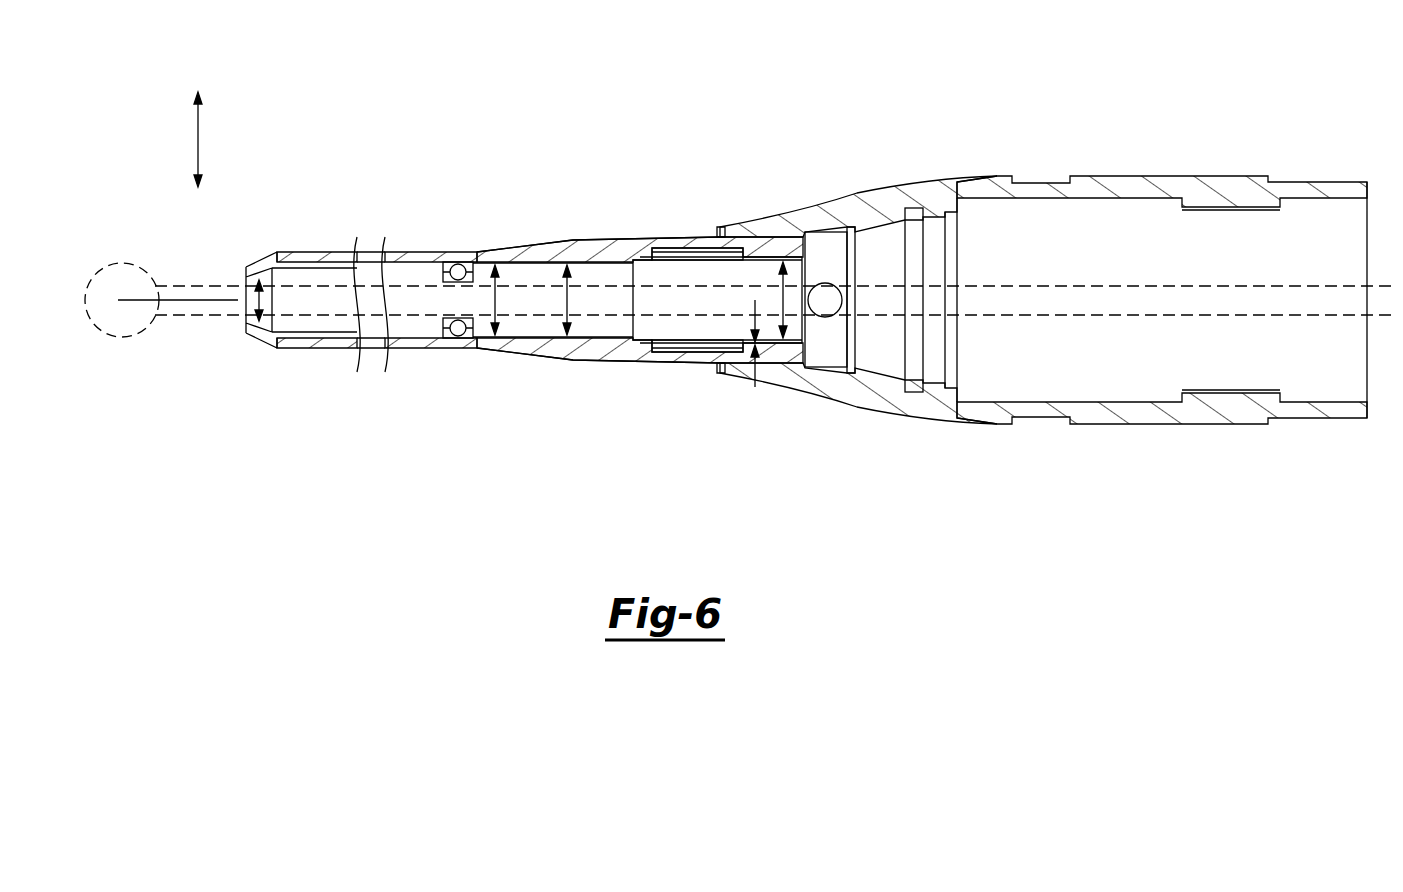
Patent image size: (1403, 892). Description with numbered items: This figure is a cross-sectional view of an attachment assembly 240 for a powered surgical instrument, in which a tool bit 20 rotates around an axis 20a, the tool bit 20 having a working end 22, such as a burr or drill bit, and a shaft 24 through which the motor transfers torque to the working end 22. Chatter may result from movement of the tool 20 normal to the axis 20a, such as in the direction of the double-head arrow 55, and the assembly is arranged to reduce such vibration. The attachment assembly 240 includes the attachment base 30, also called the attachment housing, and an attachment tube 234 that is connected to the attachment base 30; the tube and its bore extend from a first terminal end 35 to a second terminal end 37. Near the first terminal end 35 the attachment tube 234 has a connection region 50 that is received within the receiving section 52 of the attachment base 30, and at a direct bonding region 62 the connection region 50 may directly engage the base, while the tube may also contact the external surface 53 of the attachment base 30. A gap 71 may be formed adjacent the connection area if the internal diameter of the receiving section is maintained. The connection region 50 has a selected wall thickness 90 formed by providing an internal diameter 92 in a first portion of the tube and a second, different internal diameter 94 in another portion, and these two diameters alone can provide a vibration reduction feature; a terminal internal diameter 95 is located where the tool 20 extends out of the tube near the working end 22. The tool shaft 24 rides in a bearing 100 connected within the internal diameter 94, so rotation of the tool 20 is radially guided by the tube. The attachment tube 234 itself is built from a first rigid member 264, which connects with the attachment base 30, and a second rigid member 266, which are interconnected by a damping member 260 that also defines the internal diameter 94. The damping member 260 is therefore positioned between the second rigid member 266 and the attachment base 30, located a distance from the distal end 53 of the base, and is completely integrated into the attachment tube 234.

The tool bit 20 is at (172, 330).
The axis 20a is at (220, 297).
The working end 22 is at (168, 284).
The shaft 24 is at (1060, 293).
The attachment base 30 is at (758, 208).
The first terminal end 35 is at (807, 340).
The second terminal end 37 is at (248, 328).
The connection region 50 is at (678, 247).
The attachment base receiving section 52 is at (727, 223).
The external surface 53 is at (653, 240).
The double-head arrow 55 is at (198, 140).
The direct bonding region 62 is at (800, 258).
The gap 71 is at (665, 363).
The wall thickness 90 is at (753, 340).
The internal diameter 92 is at (837, 302).
The internal diameter 94 is at (567, 292).
The terminal internal diameter 95 is at (273, 300).
The bearing 100 is at (447, 260).
The attachment tube 234 is at (455, 240).
The attachment assembly 240 is at (604, 121).
The damping member 260 is at (508, 352).
The first rigid member 264 is at (573, 240).
The second rigid member 266 is at (322, 250).